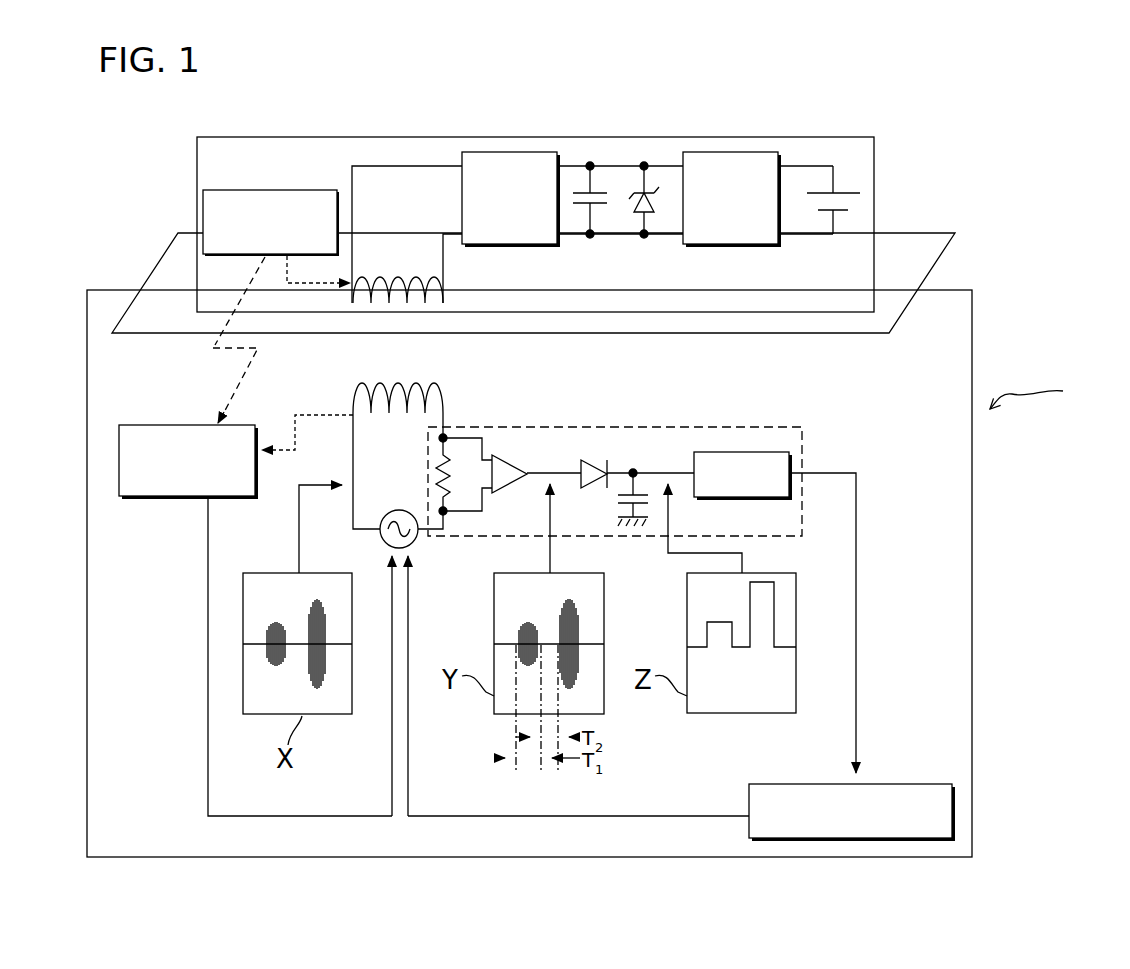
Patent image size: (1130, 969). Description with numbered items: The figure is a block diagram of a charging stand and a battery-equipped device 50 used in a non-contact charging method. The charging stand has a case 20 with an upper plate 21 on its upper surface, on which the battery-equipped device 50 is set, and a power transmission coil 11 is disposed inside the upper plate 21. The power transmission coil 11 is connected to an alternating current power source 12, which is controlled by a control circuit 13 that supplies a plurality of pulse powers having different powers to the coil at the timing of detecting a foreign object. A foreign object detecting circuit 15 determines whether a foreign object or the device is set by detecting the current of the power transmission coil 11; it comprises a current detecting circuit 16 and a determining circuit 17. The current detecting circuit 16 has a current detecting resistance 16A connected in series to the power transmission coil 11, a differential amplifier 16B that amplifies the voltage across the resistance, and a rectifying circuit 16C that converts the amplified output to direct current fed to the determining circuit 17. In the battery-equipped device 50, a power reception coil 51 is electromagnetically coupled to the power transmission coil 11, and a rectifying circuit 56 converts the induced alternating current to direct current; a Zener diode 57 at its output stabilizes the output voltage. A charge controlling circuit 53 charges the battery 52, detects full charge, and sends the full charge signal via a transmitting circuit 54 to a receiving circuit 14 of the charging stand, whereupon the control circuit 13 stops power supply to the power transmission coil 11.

The power transmission coil 11 is at (352, 397).
The alternating current power source 12 is at (410, 545).
The control circuit 13 is at (918, 784).
The receiving circuit 14 is at (163, 497).
The foreign object detecting circuit 15 is at (805, 450).
The current detecting circuit 16 is at (589, 455).
The current detecting resistance 16A is at (463, 460).
The differential amplifier 16B is at (508, 460).
The rectifying circuit 16C is at (610, 432).
The determining circuit 17 is at (753, 452).
The case 20 is at (972, 499).
The upper plate 21 is at (175, 270).
The battery-equipped device 50 is at (590, 106).
The power reception coil 51 is at (445, 297).
The battery 52 is at (845, 190).
The charge controlling circuit 53 is at (752, 152).
The transmitting circuit 54 is at (252, 190).
The rectifying circuit 56 is at (528, 152).
The Zener diode 57 is at (655, 203).